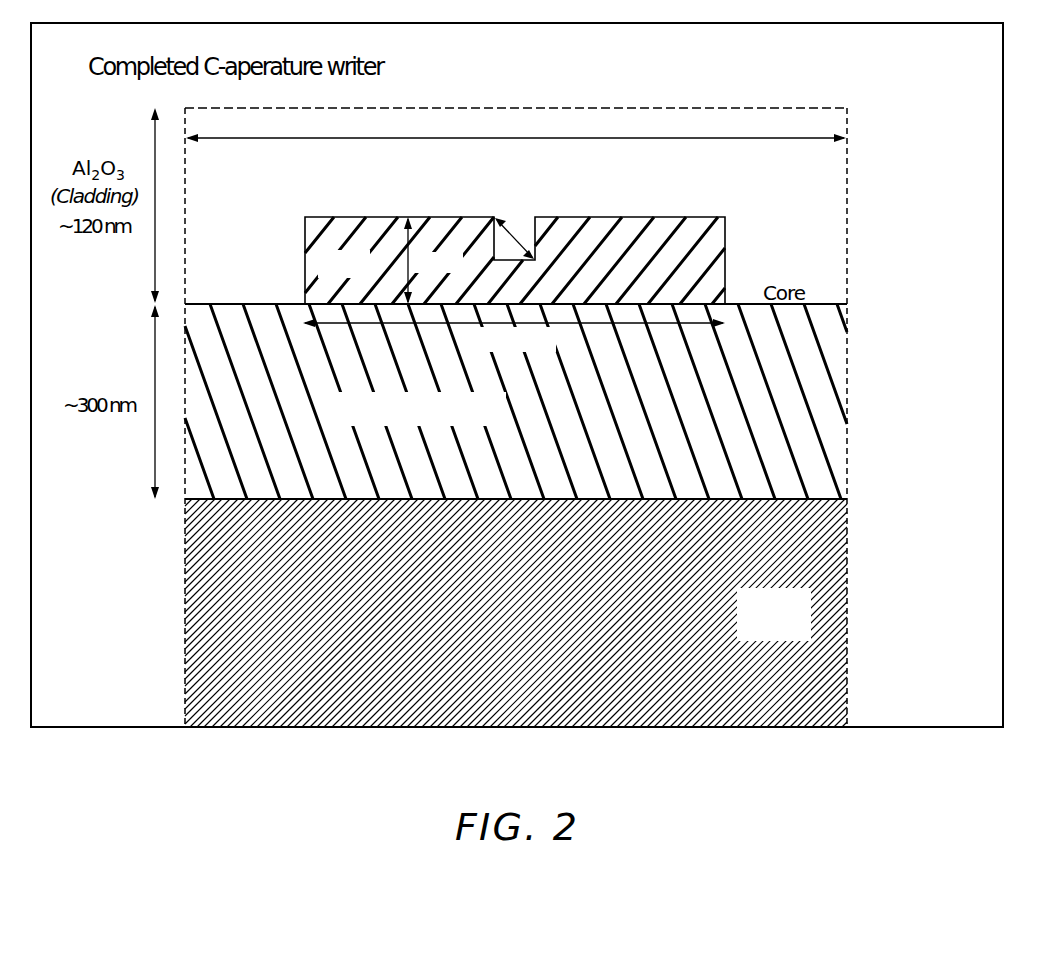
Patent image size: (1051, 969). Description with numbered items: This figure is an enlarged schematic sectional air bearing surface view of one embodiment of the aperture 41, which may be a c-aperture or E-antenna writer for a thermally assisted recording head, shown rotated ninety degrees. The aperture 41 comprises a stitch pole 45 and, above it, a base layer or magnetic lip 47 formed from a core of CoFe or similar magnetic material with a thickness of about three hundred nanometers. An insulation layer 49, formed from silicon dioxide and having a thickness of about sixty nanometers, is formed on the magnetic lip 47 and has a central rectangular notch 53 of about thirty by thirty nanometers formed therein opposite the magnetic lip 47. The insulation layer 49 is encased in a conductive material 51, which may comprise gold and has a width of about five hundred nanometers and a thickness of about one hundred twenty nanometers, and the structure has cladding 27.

The cladding 27 is at (975, 211).
The aperture 41 is at (884, 122).
The stitch pole 45 is at (832, 655).
The magnetic lip 47 is at (832, 405).
The insulation layer 49 is at (714, 243).
The conductive material 51 is at (834, 205).
The central rectangular notch 53 is at (533, 230).